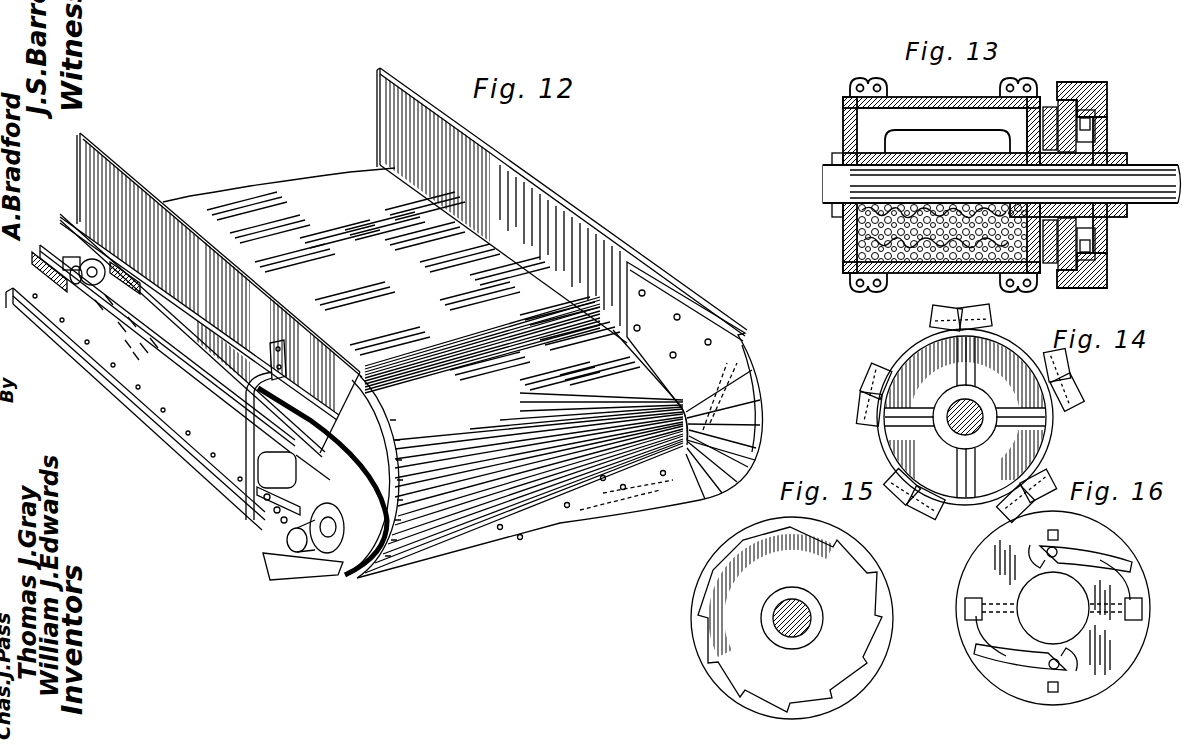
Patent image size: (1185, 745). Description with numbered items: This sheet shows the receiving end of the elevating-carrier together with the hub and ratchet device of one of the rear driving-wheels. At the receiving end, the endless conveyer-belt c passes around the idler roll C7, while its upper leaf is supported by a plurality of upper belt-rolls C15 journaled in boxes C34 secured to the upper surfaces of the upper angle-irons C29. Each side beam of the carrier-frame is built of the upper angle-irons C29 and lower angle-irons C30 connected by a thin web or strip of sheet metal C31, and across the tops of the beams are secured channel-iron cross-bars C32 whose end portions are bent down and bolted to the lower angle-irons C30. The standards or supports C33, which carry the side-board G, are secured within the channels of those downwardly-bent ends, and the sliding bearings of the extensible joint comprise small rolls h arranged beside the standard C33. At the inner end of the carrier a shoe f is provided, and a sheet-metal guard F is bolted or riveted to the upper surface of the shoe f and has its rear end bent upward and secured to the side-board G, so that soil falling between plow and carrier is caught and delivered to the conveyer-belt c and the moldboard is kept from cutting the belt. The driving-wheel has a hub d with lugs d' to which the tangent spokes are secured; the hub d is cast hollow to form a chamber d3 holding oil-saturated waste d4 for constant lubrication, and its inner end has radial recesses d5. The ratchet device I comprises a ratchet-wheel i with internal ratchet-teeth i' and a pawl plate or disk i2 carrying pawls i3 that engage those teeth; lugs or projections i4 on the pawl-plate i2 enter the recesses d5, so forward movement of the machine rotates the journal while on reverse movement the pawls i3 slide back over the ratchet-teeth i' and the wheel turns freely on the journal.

In FIG. 12, the side-board G is at (322, 350).
In FIG. 12, the endless conveyer-belt c is at (401, 280).
In FIG. 12, the idler roll C7 is at (318, 515).
In FIG. 12, the upper belt-rolls C15 is at (125, 290).
In FIG. 12, the upper angle-irons C29 is at (170, 365).
In FIG. 12, the lower angle-irons C30 is at (113, 375).
In FIG. 12, the web or strip of sheet metal C31 is at (187, 398).
In FIG. 12, the cross-bars C32 is at (260, 470).
In FIG. 12, the standards or supports C33 is at (257, 407).
In FIG. 12, the boxes C34 is at (52, 312).
In FIG. 12, the guard F is at (640, 497).
In FIG. 12, the shoe f is at (457, 540).
In FIG. 13, the hub d is at (941, 212).
In FIG. 13, the lugs d' is at (928, 202).
In FIG. 14, the lugs d' is at (958, 414).
In FIG. 13, the chamber d3 is at (893, 143).
In FIG. 13, the waste d4 is at (860, 253).
In FIG. 13, the radial recesses d5 is at (1050, 263).
In FIG. 14, the radial recesses d5 is at (900, 418).
In FIG. 13, the small rolls h is at (1160, 196).
In FIG. 14, the small rolls h is at (953, 425).
In FIG. 15, the small rolls h is at (800, 622).
In FIG. 13, the ratchet-wheel i is at (1097, 175).
In FIG. 15, the ratchet-wheel i is at (794, 618).
In FIG. 16, the ratchet-wheel i is at (1064, 608).
In FIG. 15, the ratchet-teeth i' is at (764, 619).
In FIG. 16, the pawl plate or disk i2 is at (1110, 660).
In FIG. 13, the pawls i3 is at (1067, 100).
In FIG. 16, the pawls i3 is at (1100, 557).
In FIG. 13, the lugs or projections i4 is at (1050, 108).
In FIG. 13, the ratchet device I is at (1137, 117).